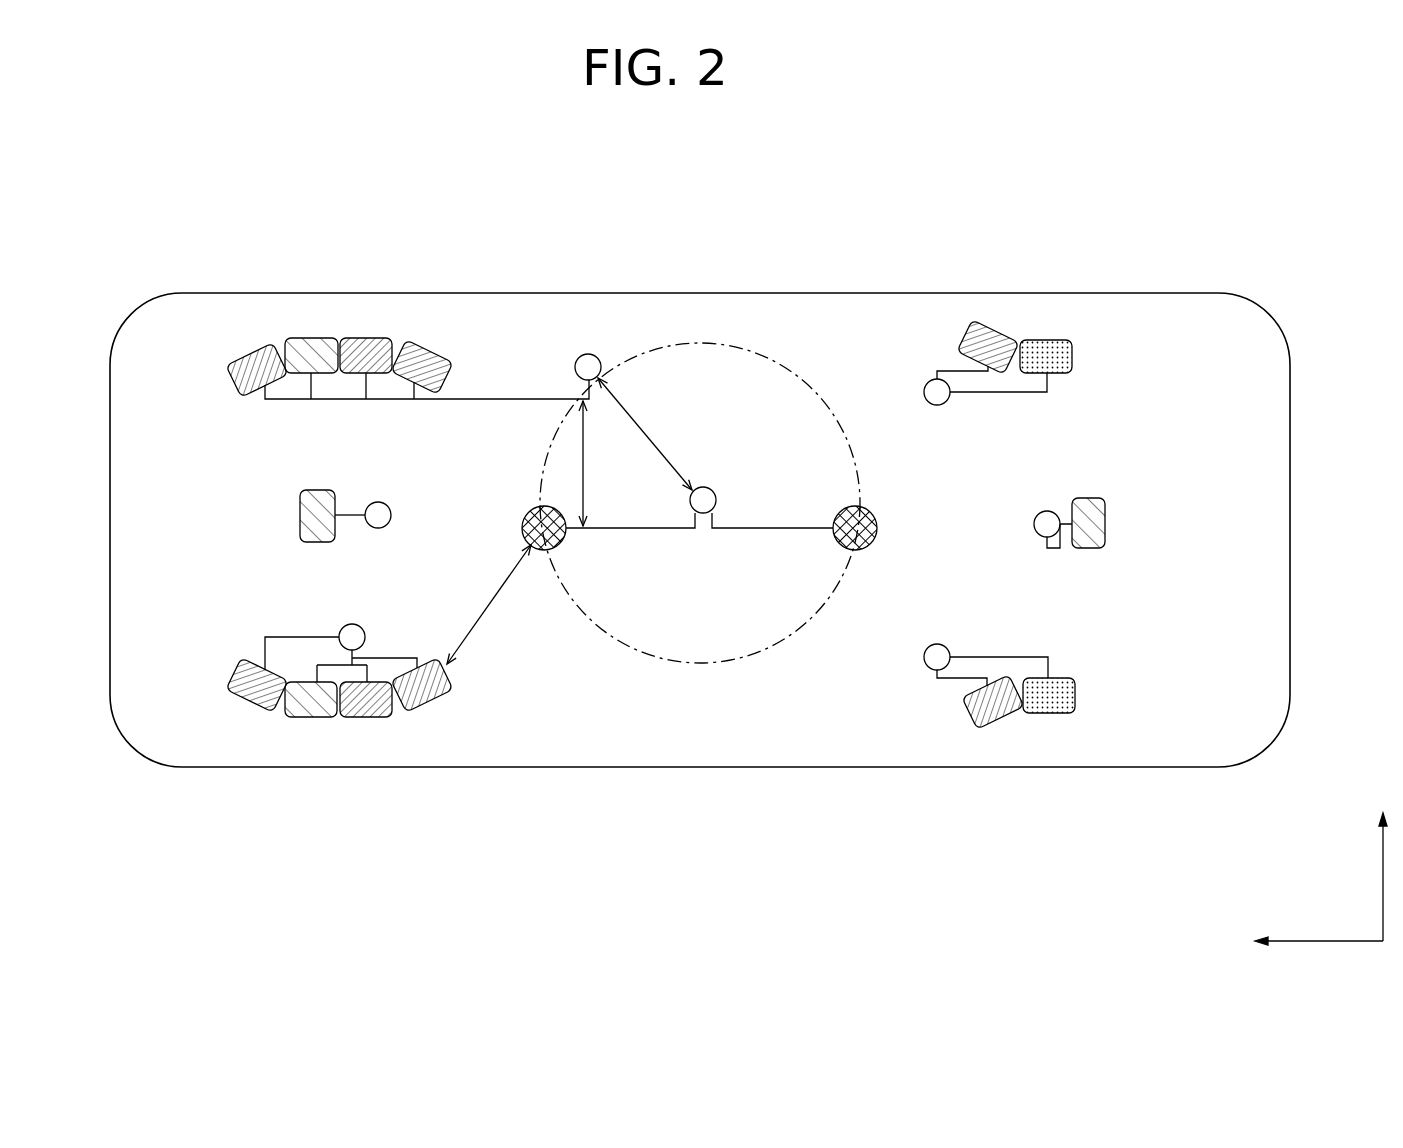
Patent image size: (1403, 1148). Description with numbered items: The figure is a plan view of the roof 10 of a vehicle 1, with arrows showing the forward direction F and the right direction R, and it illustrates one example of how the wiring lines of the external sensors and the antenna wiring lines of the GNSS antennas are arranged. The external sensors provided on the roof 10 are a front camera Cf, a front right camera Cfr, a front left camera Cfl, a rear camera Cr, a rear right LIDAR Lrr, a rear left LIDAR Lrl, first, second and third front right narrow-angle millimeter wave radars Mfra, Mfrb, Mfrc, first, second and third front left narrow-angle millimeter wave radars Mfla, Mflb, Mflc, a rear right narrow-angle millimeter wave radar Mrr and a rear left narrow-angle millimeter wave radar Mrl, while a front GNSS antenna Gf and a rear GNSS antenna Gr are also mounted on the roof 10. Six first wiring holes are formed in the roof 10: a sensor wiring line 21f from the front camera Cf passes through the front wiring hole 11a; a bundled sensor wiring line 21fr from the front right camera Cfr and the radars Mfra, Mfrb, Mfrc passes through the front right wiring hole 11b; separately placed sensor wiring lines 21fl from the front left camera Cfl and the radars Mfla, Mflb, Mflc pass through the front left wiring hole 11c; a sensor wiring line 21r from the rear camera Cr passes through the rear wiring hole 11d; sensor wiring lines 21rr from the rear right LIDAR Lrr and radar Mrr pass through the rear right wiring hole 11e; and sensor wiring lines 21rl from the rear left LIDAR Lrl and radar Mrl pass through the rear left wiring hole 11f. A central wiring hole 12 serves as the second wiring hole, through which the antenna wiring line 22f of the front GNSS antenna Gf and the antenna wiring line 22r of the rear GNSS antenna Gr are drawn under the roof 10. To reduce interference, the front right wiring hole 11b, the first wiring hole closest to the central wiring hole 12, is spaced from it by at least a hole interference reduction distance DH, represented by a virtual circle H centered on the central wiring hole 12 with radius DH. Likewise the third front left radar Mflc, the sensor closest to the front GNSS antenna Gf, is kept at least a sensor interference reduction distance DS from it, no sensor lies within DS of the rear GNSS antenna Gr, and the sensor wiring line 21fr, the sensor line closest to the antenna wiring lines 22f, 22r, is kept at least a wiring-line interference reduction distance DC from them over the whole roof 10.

The vehicle 1 is at (1207, 158).
The roof 10 is at (898, 300).
The front wiring hole 11a is at (385, 503).
The front right wiring hole 11b is at (578, 357).
The front left wiring hole 11c is at (352, 624).
The rear wiring hole 11d is at (1034, 524).
The rear right wiring hole 11e is at (937, 406).
The rear left wiring hole 11f is at (924, 657).
The central wiring hole 12 is at (716, 494).
The sensor wiring line 21f is at (352, 515).
The sensor wiring line 21fr is at (480, 399).
The sensor wiring lines 21fl is at (320, 672).
The sensor wiring line 21r is at (1055, 548).
The sensor wiring lines 21rr is at (965, 373).
The sensor wiring lines 21rl is at (1000, 657).
The antenna wiring line 22f is at (660, 530).
The antenna wiring line 22r is at (770, 530).
The front GNSS antenna Gf is at (560, 545).
The rear GNSS antenna Gr is at (872, 545).
The virtual circle H is at (716, 342).
The hole interference reduction distance DH is at (645, 434).
The wiring-line interference reduction distance DC is at (604, 463).
The sensor interference reduction distance DS is at (489, 604).
The first front right narrow-angle millimeter wave radar Mfra is at (243, 352).
The second front right narrow-angle millimeter wave radar Mfrb is at (366, 338).
The third front right narrow-angle millimeter wave radar Mfrc is at (425, 347).
The front right camera Cfr is at (318, 338).
The first front left narrow-angle millimeter wave radar Mfla is at (258, 700).
The second front left narrow-angle millimeter wave radar Mflb is at (367, 718).
The third front left narrow-angle millimeter wave radar Mflc is at (425, 705).
The front left camera Cfl is at (320, 718).
The front camera Cf is at (300, 515).
The rear camera Cr is at (1106, 524).
The rear right narrow-angle millimeter wave radar Mrr is at (992, 330).
The rear right LIDAR Lrr is at (1045, 340).
The rear left narrow-angle millimeter wave radar Mrl is at (1000, 720).
The rear left LIDAR Lrl is at (1052, 713).
The right direction R is at (1383, 860).
The forward direction F is at (1309, 941).